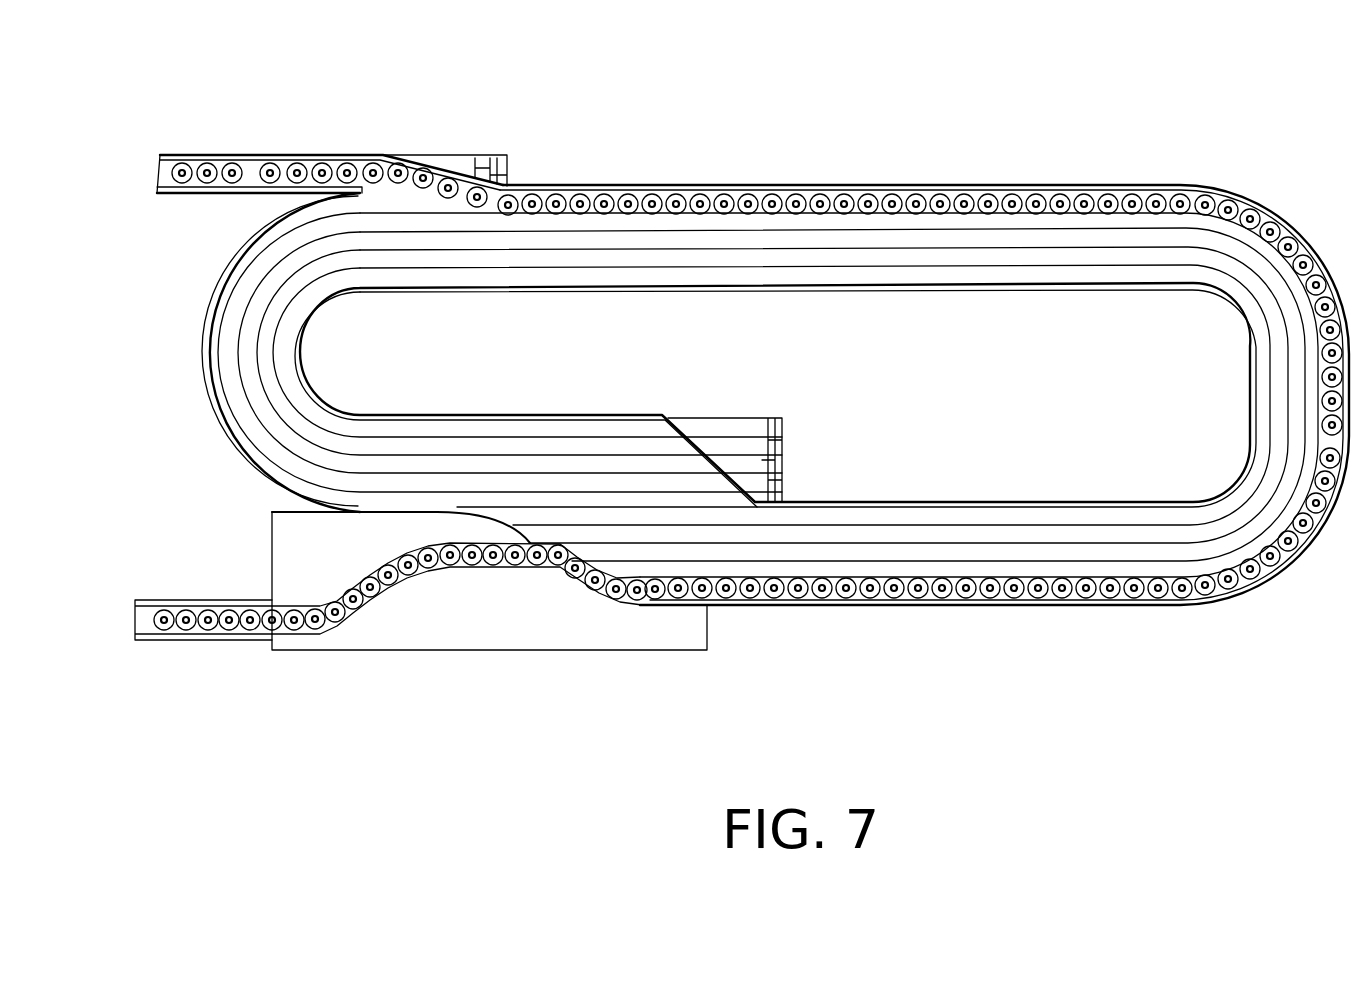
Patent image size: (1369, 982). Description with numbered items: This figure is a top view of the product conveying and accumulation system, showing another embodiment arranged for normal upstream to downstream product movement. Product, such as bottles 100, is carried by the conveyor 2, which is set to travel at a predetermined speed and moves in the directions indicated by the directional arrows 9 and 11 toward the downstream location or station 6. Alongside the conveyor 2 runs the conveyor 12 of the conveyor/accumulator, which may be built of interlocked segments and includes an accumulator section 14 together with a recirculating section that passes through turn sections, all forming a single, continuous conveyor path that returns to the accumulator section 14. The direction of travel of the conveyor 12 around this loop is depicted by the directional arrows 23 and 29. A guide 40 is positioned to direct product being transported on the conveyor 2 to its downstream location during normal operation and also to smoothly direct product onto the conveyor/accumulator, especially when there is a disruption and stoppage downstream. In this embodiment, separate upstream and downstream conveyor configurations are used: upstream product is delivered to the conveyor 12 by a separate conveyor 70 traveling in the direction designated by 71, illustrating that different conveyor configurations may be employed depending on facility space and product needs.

The conveyor 2 is at (753, 442).
The downstream location 6 is at (215, 620).
The directional arrow 9 is at (975, 619).
The directional arrow 11 is at (140, 653).
The conveyor 12 is at (595, 257).
The accumulator section 14 is at (667, 463).
The directional arrow 23 is at (835, 552).
The directional arrow 29 is at (718, 240).
The guide 40 is at (485, 622).
The conveyor 70 is at (386, 155).
The direction of travel 71 is at (302, 138).
The bottles 100 is at (746, 602).